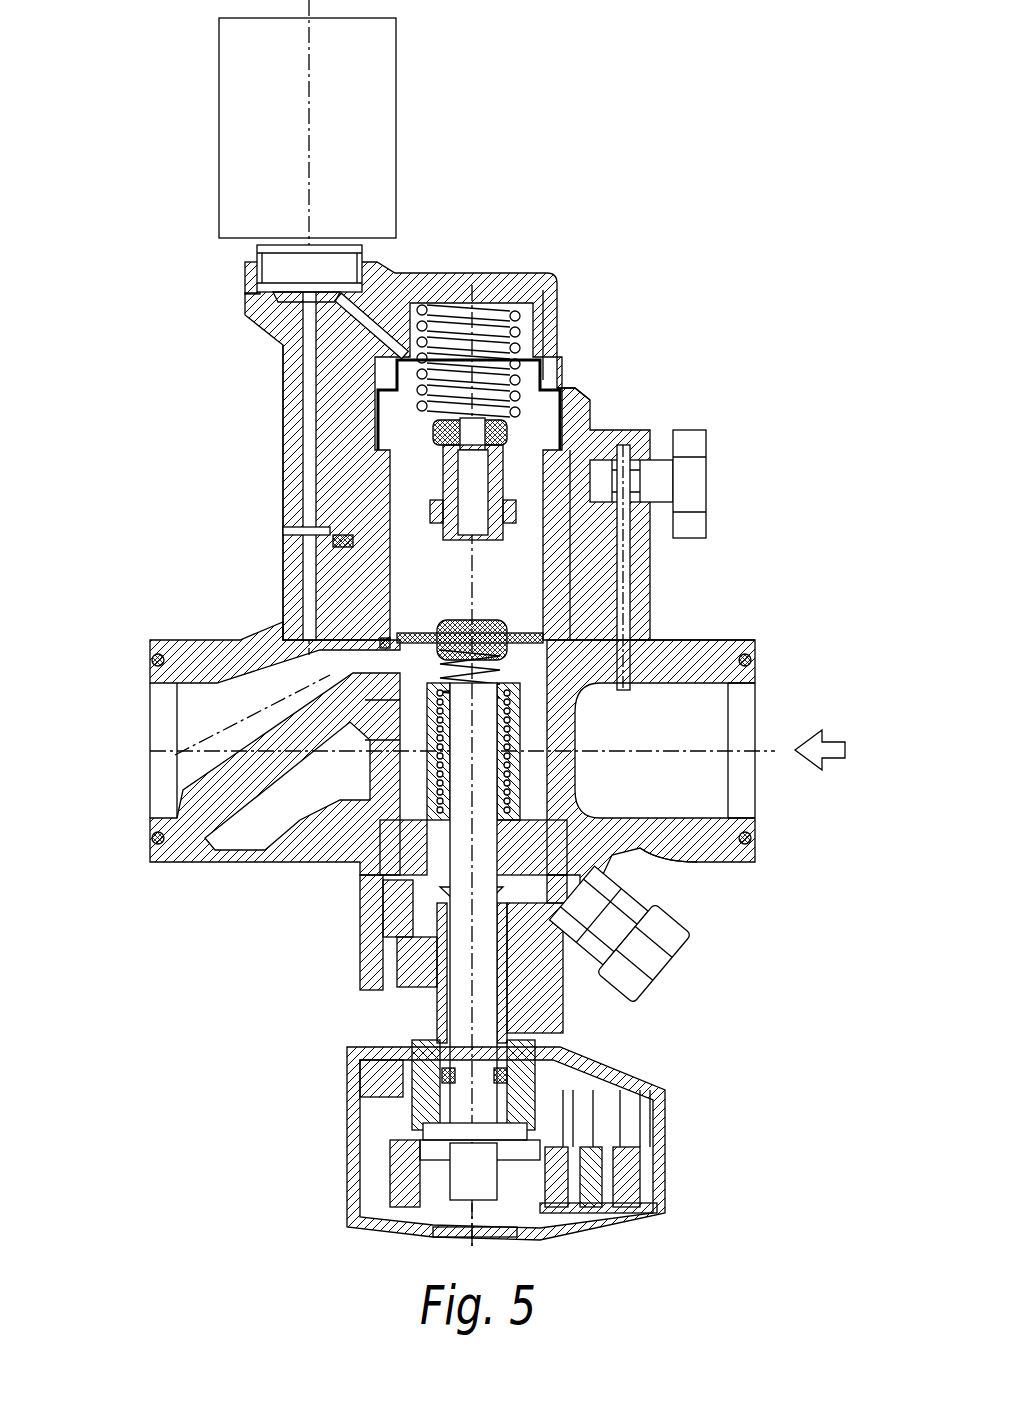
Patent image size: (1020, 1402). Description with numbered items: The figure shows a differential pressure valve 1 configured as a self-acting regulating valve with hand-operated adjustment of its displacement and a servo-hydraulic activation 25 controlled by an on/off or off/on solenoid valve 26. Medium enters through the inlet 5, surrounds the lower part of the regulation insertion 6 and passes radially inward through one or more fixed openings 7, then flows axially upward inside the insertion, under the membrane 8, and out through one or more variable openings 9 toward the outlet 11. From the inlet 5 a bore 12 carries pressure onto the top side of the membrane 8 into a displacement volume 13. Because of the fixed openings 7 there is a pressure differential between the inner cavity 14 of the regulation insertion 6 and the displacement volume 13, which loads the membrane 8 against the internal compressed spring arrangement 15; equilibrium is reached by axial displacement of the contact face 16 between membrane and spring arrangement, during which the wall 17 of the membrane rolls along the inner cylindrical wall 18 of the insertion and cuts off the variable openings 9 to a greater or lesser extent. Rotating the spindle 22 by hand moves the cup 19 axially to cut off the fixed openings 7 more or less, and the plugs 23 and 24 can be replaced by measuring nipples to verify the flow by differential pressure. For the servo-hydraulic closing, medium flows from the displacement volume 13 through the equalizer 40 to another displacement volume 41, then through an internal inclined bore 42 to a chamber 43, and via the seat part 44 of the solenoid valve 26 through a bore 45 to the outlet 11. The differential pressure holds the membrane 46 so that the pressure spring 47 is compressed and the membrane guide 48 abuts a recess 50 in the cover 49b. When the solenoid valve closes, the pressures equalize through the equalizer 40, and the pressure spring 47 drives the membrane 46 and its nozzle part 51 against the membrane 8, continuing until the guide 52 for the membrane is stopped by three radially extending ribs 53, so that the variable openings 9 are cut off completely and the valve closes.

The valve 1 is at (390, 1120).
The inlet 5 is at (705, 788).
The regulation insertion 6 is at (345, 712).
The fixed openings 7 is at (400, 838).
The membrane 8 is at (440, 630).
The variable openings 9 is at (370, 665).
The outlet 11 is at (215, 680).
The bore 12 is at (720, 700).
The displacement volume 13 is at (522, 548).
The inner cavity 14 is at (405, 900).
The spring arrangement 15 is at (395, 742).
The contact face 16 is at (585, 600).
The wall 17 is at (390, 655).
The inner cylindrical wall 18 is at (625, 572).
The cup 19 is at (640, 848).
The spindle 22 is at (490, 1103).
The plug 23 is at (640, 966).
The plug 24 is at (697, 492).
The servo-hydraulic activation 25 is at (185, 427).
The solenoid valve 26 is at (383, 88).
The equalizer 40 is at (560, 360).
The displacement volume 41 is at (567, 303).
The internal inclined bore 42 is at (433, 276).
The chamber 43 is at (385, 265).
The seat part 44 is at (258, 297).
The bore 45 is at (300, 398).
The membrane 46 is at (430, 432).
The pressure spring 47 is at (543, 276).
The membrane guide 48 is at (585, 397).
The cover 49b is at (490, 272).
The recess 50 is at (283, 347).
The nozzle part 51 is at (345, 507).
The guide 52 is at (645, 655).
The ribs 53 is at (305, 782).